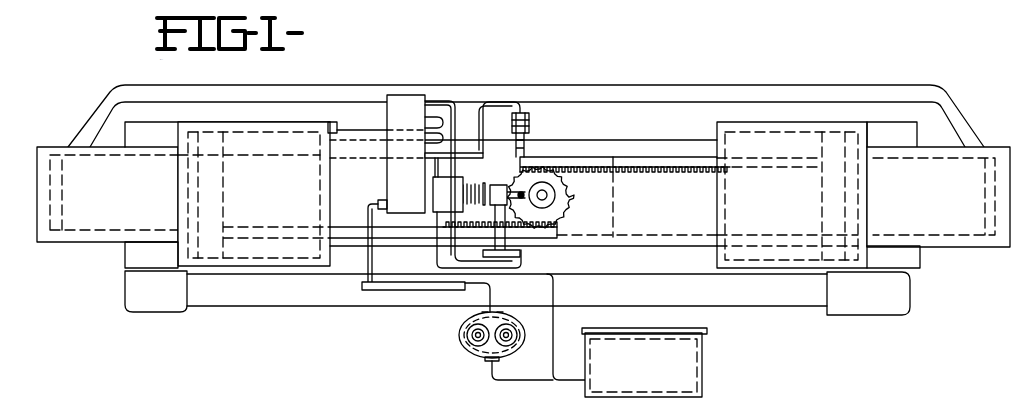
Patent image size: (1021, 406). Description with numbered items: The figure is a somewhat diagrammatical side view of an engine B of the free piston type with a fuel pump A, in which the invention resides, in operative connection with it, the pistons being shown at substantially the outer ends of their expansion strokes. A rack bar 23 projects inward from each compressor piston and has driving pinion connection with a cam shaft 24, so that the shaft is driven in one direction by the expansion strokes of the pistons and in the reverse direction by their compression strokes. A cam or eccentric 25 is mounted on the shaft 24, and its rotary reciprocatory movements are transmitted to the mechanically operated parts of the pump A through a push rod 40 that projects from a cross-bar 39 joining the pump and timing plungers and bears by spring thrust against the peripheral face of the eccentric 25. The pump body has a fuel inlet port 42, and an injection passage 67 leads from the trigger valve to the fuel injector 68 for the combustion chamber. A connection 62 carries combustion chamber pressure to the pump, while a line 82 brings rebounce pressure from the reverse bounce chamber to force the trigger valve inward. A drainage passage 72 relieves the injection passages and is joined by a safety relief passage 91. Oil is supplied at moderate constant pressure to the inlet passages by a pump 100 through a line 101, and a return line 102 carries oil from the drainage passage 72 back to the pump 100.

The fuel pump A is at (415, 94).
The engine B is at (667, 138).
The rack bar 23 is at (671, 163).
The cam shaft 24 is at (568, 188).
The cam or eccentric 25 is at (550, 188).
The cross-bar 39 is at (487, 171).
The push rod 40 is at (503, 204).
The fuel inlet port 42 is at (373, 200).
The connection 62 is at (442, 100).
The injection passage 67 is at (496, 101).
The fuel injector 68 is at (531, 128).
The drainage passage 72 is at (427, 145).
The line 82 is at (367, 128).
The safety relief passage 91 is at (432, 169).
The pump 100 is at (458, 343).
The line 101 is at (425, 285).
The return line 102 is at (557, 292).